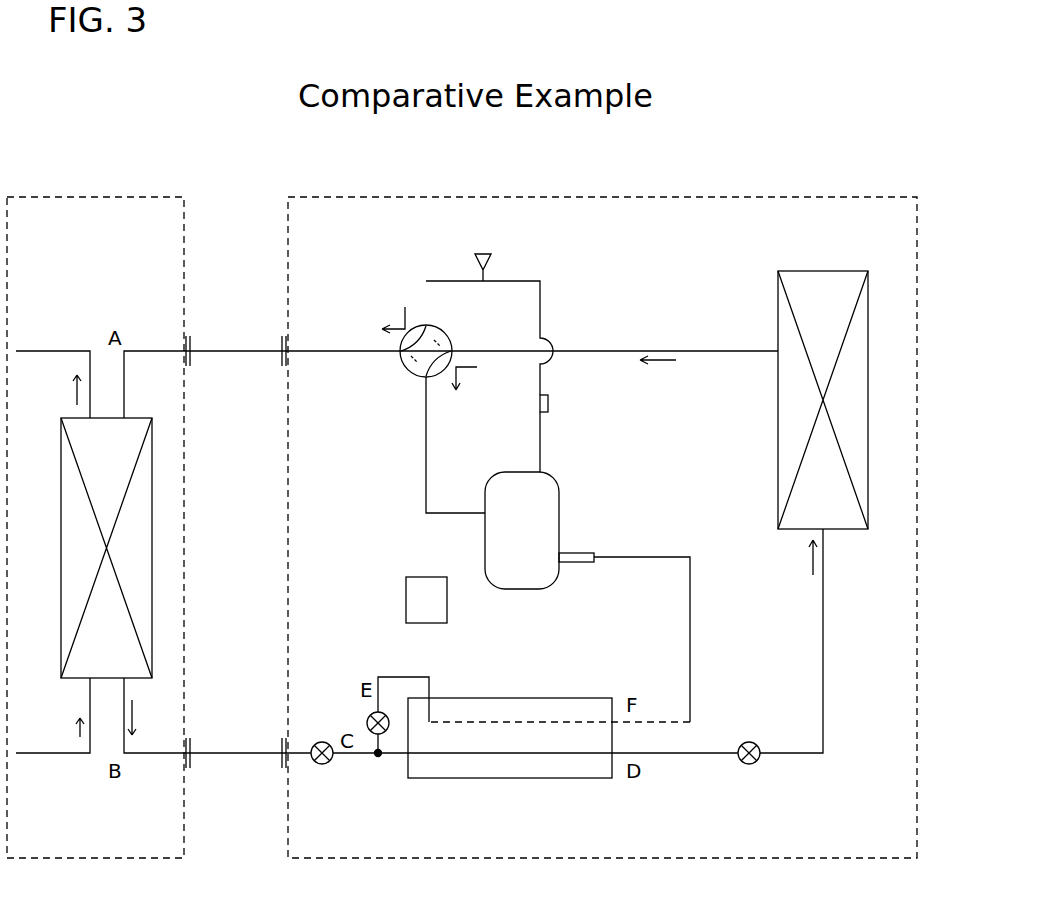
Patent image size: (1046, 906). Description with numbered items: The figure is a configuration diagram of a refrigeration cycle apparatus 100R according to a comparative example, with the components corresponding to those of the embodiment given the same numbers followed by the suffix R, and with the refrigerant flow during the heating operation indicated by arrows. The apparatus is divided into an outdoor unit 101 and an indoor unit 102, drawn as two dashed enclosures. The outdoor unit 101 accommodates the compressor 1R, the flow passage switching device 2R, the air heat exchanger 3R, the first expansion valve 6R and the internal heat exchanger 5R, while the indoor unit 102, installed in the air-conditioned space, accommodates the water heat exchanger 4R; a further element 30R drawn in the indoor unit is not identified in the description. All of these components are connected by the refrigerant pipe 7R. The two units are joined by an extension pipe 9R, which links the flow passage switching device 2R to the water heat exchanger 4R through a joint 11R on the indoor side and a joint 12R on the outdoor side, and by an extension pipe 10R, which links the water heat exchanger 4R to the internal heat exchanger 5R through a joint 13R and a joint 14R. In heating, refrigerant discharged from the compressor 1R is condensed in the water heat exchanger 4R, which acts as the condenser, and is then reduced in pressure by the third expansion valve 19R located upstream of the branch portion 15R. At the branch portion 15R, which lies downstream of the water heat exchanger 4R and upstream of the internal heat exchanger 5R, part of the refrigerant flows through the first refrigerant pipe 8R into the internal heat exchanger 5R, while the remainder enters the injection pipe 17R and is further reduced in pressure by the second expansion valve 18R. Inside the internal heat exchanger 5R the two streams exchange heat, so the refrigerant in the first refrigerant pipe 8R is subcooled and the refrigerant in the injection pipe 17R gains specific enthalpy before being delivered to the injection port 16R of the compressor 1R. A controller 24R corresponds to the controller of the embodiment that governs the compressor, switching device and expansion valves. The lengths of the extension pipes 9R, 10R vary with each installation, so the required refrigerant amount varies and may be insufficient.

The refrigeration cycle apparatus 100R is at (245, 215).
The outdoor unit 101 is at (680, 197).
The indoor unit 102 is at (40, 197).
The compressor 1R is at (559, 502).
The flow passage switching device 2R is at (420, 330).
The air heat exchanger 3R is at (868, 348).
The water heat exchanger 4R is at (152, 488).
The internal heat exchanger 5R is at (438, 780).
The first expansion valve 6R is at (753, 742).
The refrigerant pipe 7R is at (823, 598).
The first refrigerant pipe 8R is at (682, 755).
The extension pipe 9R is at (210, 345).
The extension pipe 10R is at (224, 762).
The joint 11R is at (186, 346).
The joint 12R is at (282, 346).
The joint 13R is at (186, 768).
The joint 14R is at (282, 768).
The branch portion 15R is at (378, 760).
The injection port 16R is at (590, 553).
The injection pipe 17R is at (690, 606).
The second expansion valve 18R is at (368, 718).
The third expansion valve 19R is at (318, 766).
The controller 24R is at (405, 597).
The indoor fan / pipe 30R is at (90, 706).